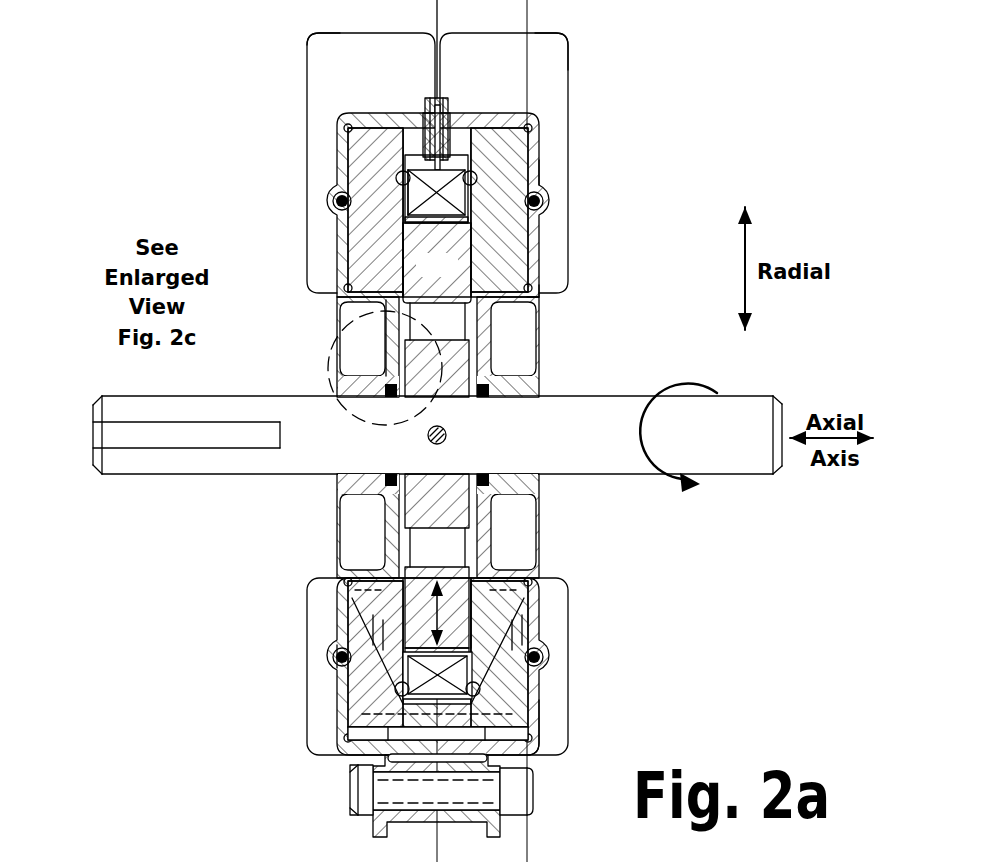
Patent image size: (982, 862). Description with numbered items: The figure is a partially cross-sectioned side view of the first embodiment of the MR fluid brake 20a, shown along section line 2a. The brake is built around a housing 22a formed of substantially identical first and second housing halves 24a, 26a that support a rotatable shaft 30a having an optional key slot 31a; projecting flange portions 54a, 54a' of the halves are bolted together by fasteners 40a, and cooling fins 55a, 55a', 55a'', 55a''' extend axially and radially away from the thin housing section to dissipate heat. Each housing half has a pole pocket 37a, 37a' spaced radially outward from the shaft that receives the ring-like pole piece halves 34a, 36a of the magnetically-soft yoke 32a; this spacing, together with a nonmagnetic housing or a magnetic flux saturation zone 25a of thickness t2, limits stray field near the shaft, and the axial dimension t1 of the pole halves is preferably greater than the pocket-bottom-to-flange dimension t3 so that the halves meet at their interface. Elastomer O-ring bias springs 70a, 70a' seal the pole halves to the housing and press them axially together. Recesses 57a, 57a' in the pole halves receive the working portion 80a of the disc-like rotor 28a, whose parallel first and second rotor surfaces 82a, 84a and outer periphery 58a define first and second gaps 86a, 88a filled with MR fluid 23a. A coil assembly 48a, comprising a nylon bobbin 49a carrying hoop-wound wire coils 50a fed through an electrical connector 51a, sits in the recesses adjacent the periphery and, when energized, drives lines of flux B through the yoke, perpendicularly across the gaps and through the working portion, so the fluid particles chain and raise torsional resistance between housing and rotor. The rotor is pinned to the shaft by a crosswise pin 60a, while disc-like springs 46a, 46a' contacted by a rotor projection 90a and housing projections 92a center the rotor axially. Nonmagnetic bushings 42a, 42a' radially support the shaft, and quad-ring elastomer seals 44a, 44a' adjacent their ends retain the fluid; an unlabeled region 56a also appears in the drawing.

The MR fluid brake 20a is at (590, 191).
The housing 22a is at (556, 147).
The MR fluid 23a is at (350, 212).
The first housing half 24a is at (312, 36).
The magnetic flux saturation zone 25a is at (541, 530).
The second housing half 26a is at (568, 46).
The rotor 28a is at (437, 263).
The rotatable shaft 30a is at (437, 437).
The key slot 31a is at (150, 432).
The magnetically-soft yoke 32a is at (548, 726).
The first pole piece half 34a is at (334, 600).
The second pole piece half 36a is at (544, 600).
The pole pocket 37a is at (516, 189).
The pole pocket 37a' is at (319, 181).
The fasteners 40a is at (524, 790).
The bushing 42a is at (556, 381).
The bushing 42a' is at (323, 381).
The elastomer seal 44a is at (581, 347).
The elastomer seal 44a' is at (362, 501).
The disc-like spring 46a is at (510, 365).
The disc-like spring 46a' is at (363, 321).
The coil assembly 48a is at (388, 679).
The bobbin 49a is at (536, 626).
The wire coils 50a is at (543, 700).
The electrical connector 51a is at (437, 96).
The projecting flange portion 54a is at (482, 799).
The projecting flange portion 54a' is at (388, 799).
The cooling fin 55a is at (608, 727).
The cooling fin 55a' is at (391, 667).
The cooling fin 55a'' is at (504, 163).
The cooling fin 55a''' is at (371, 163).
The lower left cavity wall 56a is at (340, 528).
The recess 57a is at (553, 608).
The recess 57a' is at (365, 596).
The outer periphery 58a is at (472, 236).
The pin 60a is at (448, 435).
The bias spring 70a is at (595, 207).
The bias spring 70a' is at (288, 192).
The working portion 80a is at (338, 660).
The first rotor surface 82a is at (402, 238).
The second rotor surface 84a is at (472, 262).
The first gap 86a is at (402, 270).
The second gap 88a is at (536, 288).
The rotor projection 90a is at (396, 310).
The housing projection 92a is at (395, 355).
The lines of flux B is at (346, 650).
The axial dimension of the pole piece halves t1 is at (437, 17).
The thickness of the magnetic flux saturation zone t2 is at (440, 322).
The pole pocket bottom-to-flange dimension t3 is at (437, 850).
The section line 2a is at (275, 861).